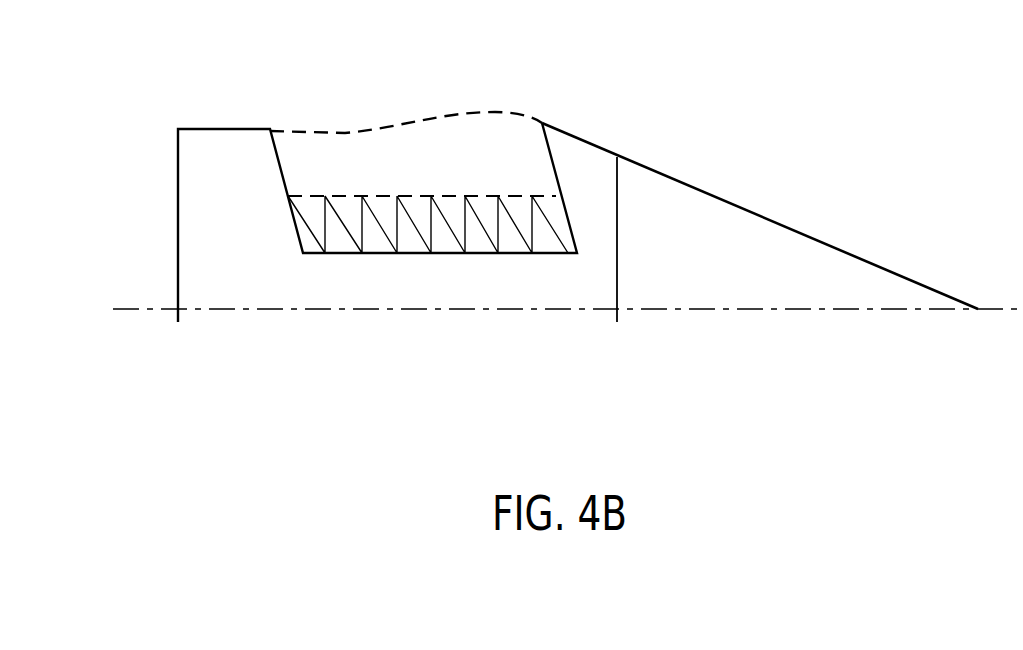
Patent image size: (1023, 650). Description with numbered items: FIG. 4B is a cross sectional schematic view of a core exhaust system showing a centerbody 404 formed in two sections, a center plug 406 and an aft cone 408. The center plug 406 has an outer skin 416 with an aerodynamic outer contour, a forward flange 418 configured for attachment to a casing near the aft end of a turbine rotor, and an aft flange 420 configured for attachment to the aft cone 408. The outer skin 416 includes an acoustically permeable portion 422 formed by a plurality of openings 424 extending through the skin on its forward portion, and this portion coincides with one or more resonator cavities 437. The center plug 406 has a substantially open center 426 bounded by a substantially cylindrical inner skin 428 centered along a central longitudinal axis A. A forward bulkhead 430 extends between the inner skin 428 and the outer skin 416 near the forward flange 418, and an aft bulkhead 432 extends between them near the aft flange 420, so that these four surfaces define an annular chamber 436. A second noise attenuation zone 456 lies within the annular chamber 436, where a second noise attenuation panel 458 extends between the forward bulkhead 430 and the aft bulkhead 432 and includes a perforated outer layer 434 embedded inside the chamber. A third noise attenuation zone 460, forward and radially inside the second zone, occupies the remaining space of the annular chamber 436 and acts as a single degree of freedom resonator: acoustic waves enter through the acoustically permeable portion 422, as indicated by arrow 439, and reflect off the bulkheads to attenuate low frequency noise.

The centerbody 404 is at (700, 100).
The center plug 406 is at (232, 129).
The aft cone 408 is at (838, 248).
The outer skin 416 is at (303, 131).
The forward flange 418 is at (178, 267).
The aft flange 420 is at (618, 273).
The acoustically permeable portion 422 is at (342, 133).
The openings 424 is at (371, 132).
The open center 426 is at (383, 285).
The inner skin 428 is at (537, 253).
The forward bulkhead 430 is at (288, 196).
The aft bulkhead 432 is at (567, 213).
The outer layer 434 is at (543, 194).
The annular chamber 436 is at (380, 230).
The resonator cavities 437 is at (293, 147).
The leakage flow direction 439 is at (518, 150).
The second noise attenuation zone 456 is at (335, 168).
The second noise attenuation panel 458 is at (475, 242).
The third noise attenuation zone 460 is at (303, 168).
The central longitudinal axis A is at (193, 310).